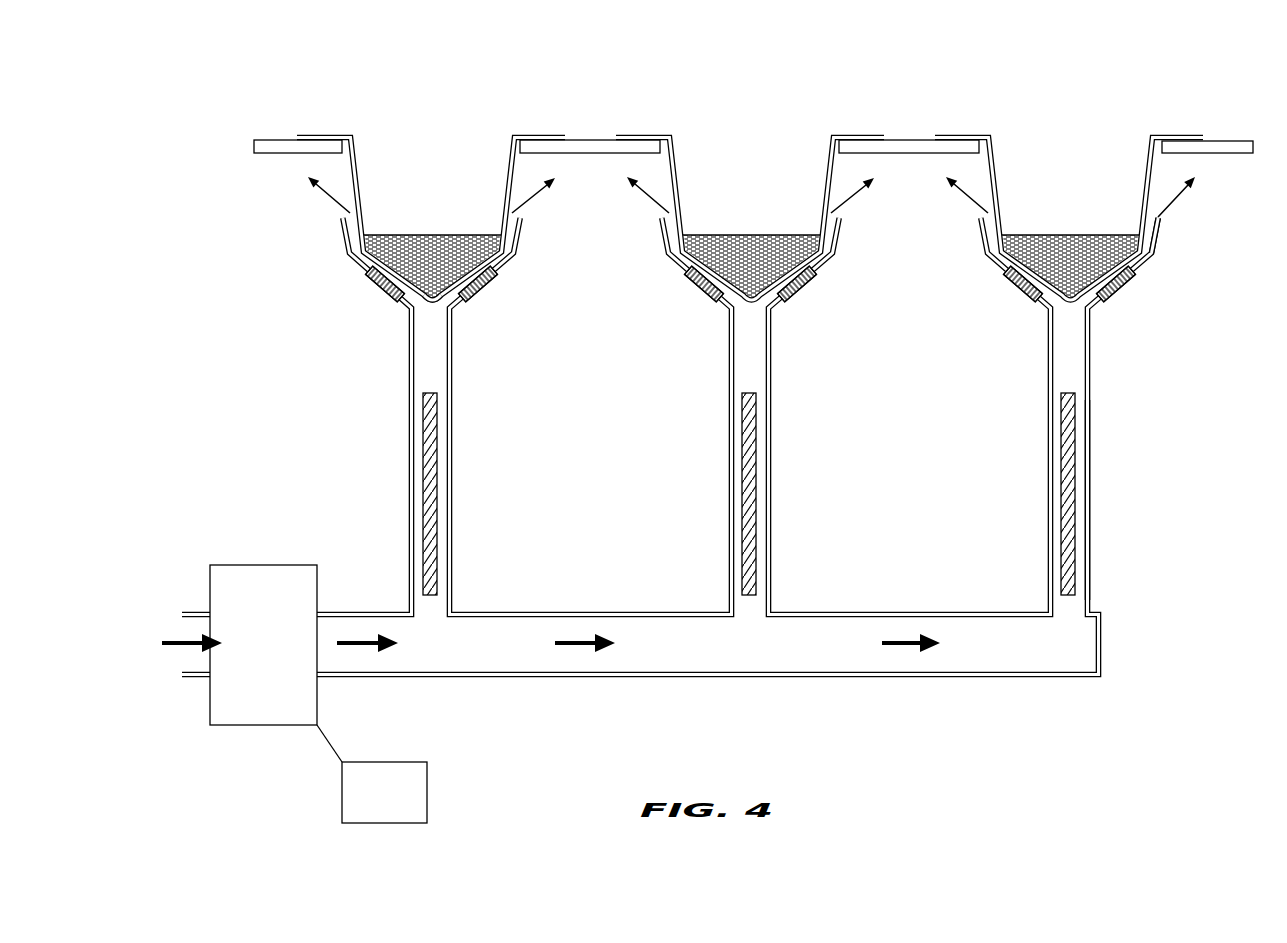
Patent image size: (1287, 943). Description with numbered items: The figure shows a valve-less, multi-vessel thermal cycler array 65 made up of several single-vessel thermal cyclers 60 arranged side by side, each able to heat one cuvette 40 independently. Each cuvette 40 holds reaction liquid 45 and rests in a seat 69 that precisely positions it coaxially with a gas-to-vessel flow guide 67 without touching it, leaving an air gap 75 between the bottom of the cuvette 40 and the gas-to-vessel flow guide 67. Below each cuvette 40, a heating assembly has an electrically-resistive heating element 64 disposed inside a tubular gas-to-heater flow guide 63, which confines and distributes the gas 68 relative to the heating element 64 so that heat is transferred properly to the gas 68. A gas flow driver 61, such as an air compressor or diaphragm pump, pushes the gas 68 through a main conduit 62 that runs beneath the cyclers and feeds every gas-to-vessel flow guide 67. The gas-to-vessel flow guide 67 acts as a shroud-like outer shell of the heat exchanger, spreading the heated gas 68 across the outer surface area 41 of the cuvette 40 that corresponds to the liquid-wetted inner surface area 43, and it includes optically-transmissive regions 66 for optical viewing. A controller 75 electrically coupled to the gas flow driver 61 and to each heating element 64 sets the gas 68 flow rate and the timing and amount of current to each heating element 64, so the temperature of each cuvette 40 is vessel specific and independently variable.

The cuvette 40 is at (357, 167).
The outer surface area 41 is at (432, 306).
The inner surface area 43 is at (505, 262).
The reaction liquid 45 is at (425, 232).
The single-vessel thermal cycler 60 is at (343, 333).
The gas flow driver 61 is at (257, 572).
The main conduit 62 is at (825, 678).
The gas-to-heater flow guide 63 is at (1095, 486).
The heating element 64 is at (426, 437).
The multi-vessel thermal cycler array 65 is at (497, 88).
The optically-transmissive region 66 is at (1018, 288).
The gas-to-vessel flow guide 67 is at (1160, 250).
The gas 68 is at (1175, 200).
The seat 69 is at (280, 152).
The controller 75 is at (826, 263).